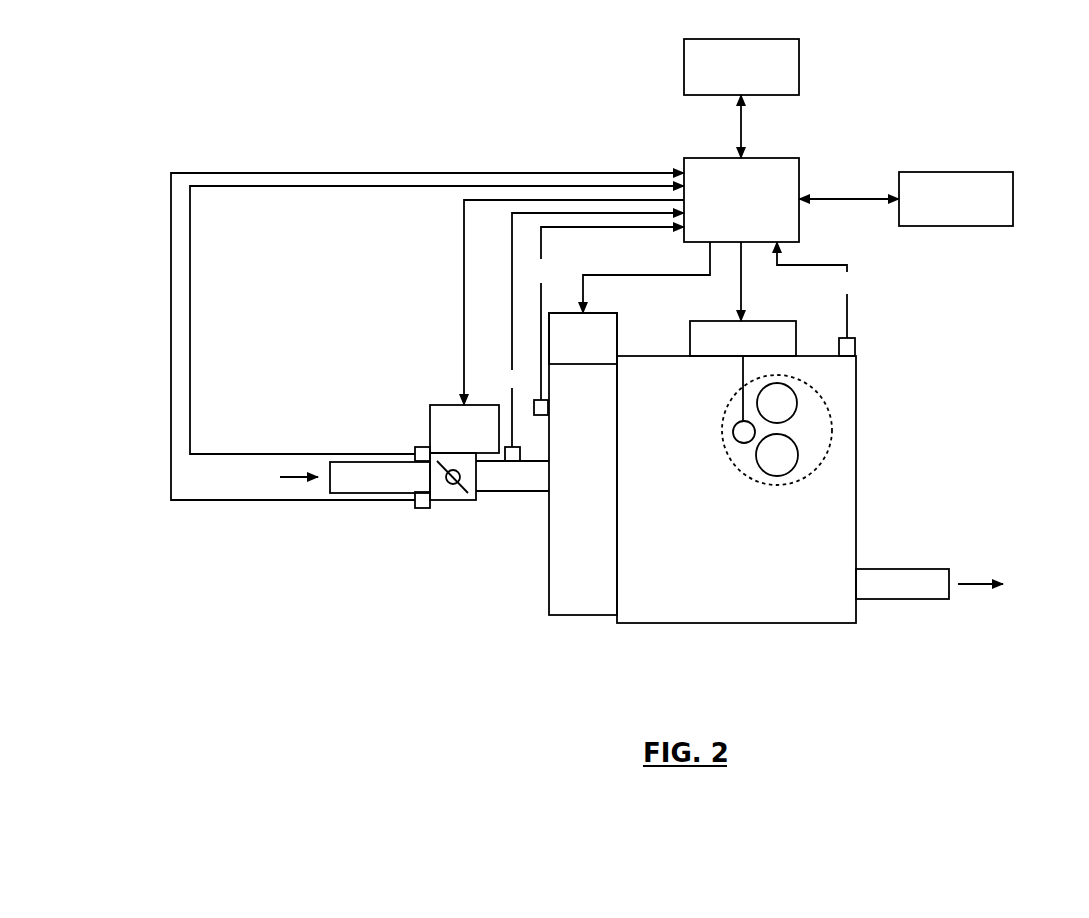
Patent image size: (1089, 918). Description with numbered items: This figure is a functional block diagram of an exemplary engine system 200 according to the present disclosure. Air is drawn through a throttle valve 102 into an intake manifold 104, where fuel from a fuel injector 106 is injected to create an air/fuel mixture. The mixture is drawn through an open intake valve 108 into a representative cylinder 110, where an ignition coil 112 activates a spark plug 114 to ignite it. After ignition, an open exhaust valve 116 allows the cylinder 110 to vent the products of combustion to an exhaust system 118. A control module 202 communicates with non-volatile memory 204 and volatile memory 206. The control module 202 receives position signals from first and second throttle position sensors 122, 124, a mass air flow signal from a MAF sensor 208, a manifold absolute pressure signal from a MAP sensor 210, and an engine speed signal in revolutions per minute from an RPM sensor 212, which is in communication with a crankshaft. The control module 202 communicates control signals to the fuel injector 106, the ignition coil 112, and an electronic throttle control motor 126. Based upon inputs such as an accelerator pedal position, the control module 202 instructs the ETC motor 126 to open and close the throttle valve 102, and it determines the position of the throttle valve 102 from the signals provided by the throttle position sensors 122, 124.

The engine system 200 is at (216, 29).
The control module 202 is at (799, 233).
The non-volatile memory 204 is at (799, 66).
The volatile memory 206 is at (956, 226).
The throttle valve 102 is at (458, 500).
The intake manifold 104 is at (585, 615).
The fuel injector 106 is at (617, 338).
The intake valve 108 is at (761, 471).
The cylinder 110 is at (787, 485).
The ignition coil 112 is at (770, 321).
The spark plug 114 is at (733, 433).
The exhaust valve 116 is at (791, 390).
The exhaust system 118 is at (906, 599).
The first throttle position sensor 122 is at (417, 447).
The second throttle position sensor 124 is at (422, 508).
The electronic throttle control motor 126 is at (444, 405).
The MAF sensor 208 is at (512, 461).
The MAP sensor 210 is at (548, 408).
The RPM sensor 212 is at (855, 346).